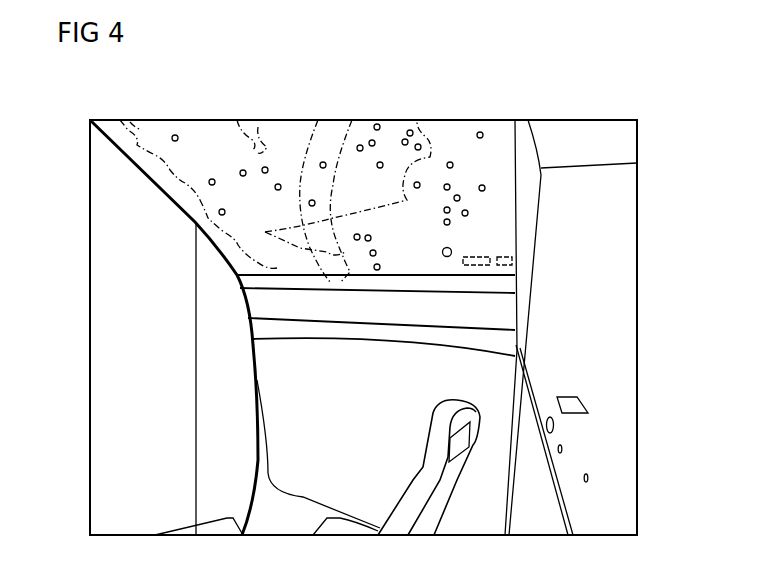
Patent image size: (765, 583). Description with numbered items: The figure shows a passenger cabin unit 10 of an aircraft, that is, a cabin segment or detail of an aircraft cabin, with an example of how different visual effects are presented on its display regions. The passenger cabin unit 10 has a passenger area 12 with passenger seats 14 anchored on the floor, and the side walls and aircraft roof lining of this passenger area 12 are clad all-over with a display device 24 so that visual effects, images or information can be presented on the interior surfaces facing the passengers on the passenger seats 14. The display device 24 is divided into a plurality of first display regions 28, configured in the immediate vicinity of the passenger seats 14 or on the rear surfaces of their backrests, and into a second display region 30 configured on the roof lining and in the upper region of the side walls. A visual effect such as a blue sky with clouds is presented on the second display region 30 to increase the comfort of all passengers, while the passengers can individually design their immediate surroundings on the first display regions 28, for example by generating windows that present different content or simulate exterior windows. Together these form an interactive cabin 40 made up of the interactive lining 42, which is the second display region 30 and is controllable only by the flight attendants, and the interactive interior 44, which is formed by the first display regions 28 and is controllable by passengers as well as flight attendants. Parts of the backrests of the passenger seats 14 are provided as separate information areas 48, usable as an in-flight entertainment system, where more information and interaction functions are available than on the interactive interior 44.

The passenger cabin unit 10 is at (146, 114).
The passenger area 12 is at (278, 519).
The passenger seats 14 is at (401, 506).
The display device 24 is at (449, 134).
The first display regions 28 is at (349, 455).
The second display region 30 is at (316, 182).
The interactive cabin 40 is at (113, 350).
The interactive lining 42 is at (302, 134).
The interactive interior 44 is at (294, 375).
The separate information area 48 is at (473, 448).